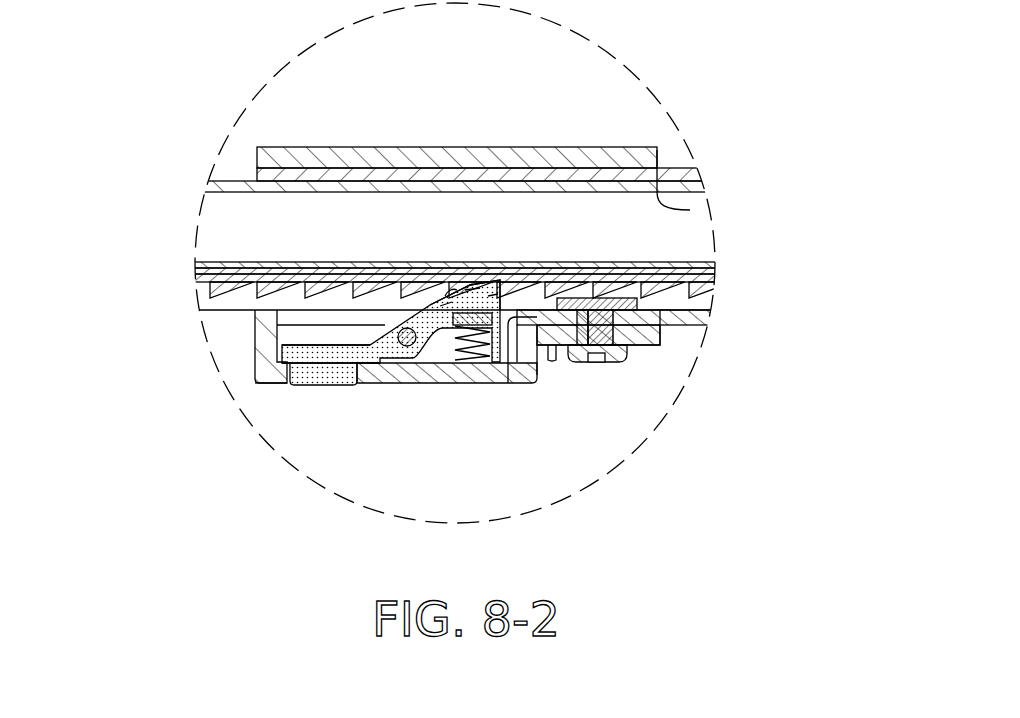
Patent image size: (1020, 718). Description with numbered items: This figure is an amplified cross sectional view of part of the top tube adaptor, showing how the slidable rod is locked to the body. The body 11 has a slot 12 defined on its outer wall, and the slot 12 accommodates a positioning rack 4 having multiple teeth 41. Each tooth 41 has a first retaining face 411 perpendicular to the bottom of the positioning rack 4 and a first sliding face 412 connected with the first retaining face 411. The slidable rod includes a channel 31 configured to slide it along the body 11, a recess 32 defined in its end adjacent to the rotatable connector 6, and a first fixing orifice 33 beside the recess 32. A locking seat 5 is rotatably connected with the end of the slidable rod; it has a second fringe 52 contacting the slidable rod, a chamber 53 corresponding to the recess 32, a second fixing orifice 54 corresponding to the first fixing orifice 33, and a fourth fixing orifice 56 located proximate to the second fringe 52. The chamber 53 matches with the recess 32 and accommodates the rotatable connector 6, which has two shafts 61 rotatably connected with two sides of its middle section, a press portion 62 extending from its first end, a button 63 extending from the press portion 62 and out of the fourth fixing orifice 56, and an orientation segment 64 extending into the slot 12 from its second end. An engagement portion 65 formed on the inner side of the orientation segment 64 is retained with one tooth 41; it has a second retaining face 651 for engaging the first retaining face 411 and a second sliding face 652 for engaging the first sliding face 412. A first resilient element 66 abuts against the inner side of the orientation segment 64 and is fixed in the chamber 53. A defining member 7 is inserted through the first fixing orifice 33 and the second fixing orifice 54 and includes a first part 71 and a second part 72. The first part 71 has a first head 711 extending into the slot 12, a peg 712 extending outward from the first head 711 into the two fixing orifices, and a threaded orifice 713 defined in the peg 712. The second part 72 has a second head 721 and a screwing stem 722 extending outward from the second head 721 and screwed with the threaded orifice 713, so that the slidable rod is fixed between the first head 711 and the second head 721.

The positioning rack 4 is at (714, 268).
The locking seat 5 is at (306, 146).
The rotatable connector 6 is at (337, 388).
The defining member 7 is at (790, 380).
The body 11 is at (210, 182).
The slot 12 is at (235, 302).
The channel 31 is at (690, 210).
The recess 32 is at (515, 385).
The first fixing orifice 33 is at (565, 322).
The teeth 41 is at (302, 205).
The second fringe 52 is at (258, 172).
The chamber 53 is at (287, 336).
The second fixing orifice 54 is at (598, 362).
The fourth fixing orifice 56 is at (255, 385).
The shaft 61 is at (407, 346).
The press portion 62 is at (285, 350).
The button 63 is at (315, 388).
The orientation segment 64 is at (470, 362).
The engagement portion 65 is at (592, 205).
The first resilient element 66 is at (437, 385).
The first part 71 is at (655, 328).
The second part 72 is at (623, 353).
The first retaining face 411 is at (447, 303).
The first sliding face 412 is at (450, 293).
The second retaining face 651 is at (492, 294).
The second sliding face 652 is at (473, 293).
The first head 711 is at (637, 303).
The peg 712 is at (613, 338).
The threaded orifice 713 is at (668, 328).
The second head 721 is at (620, 362).
The screwing stem 722 is at (612, 362).